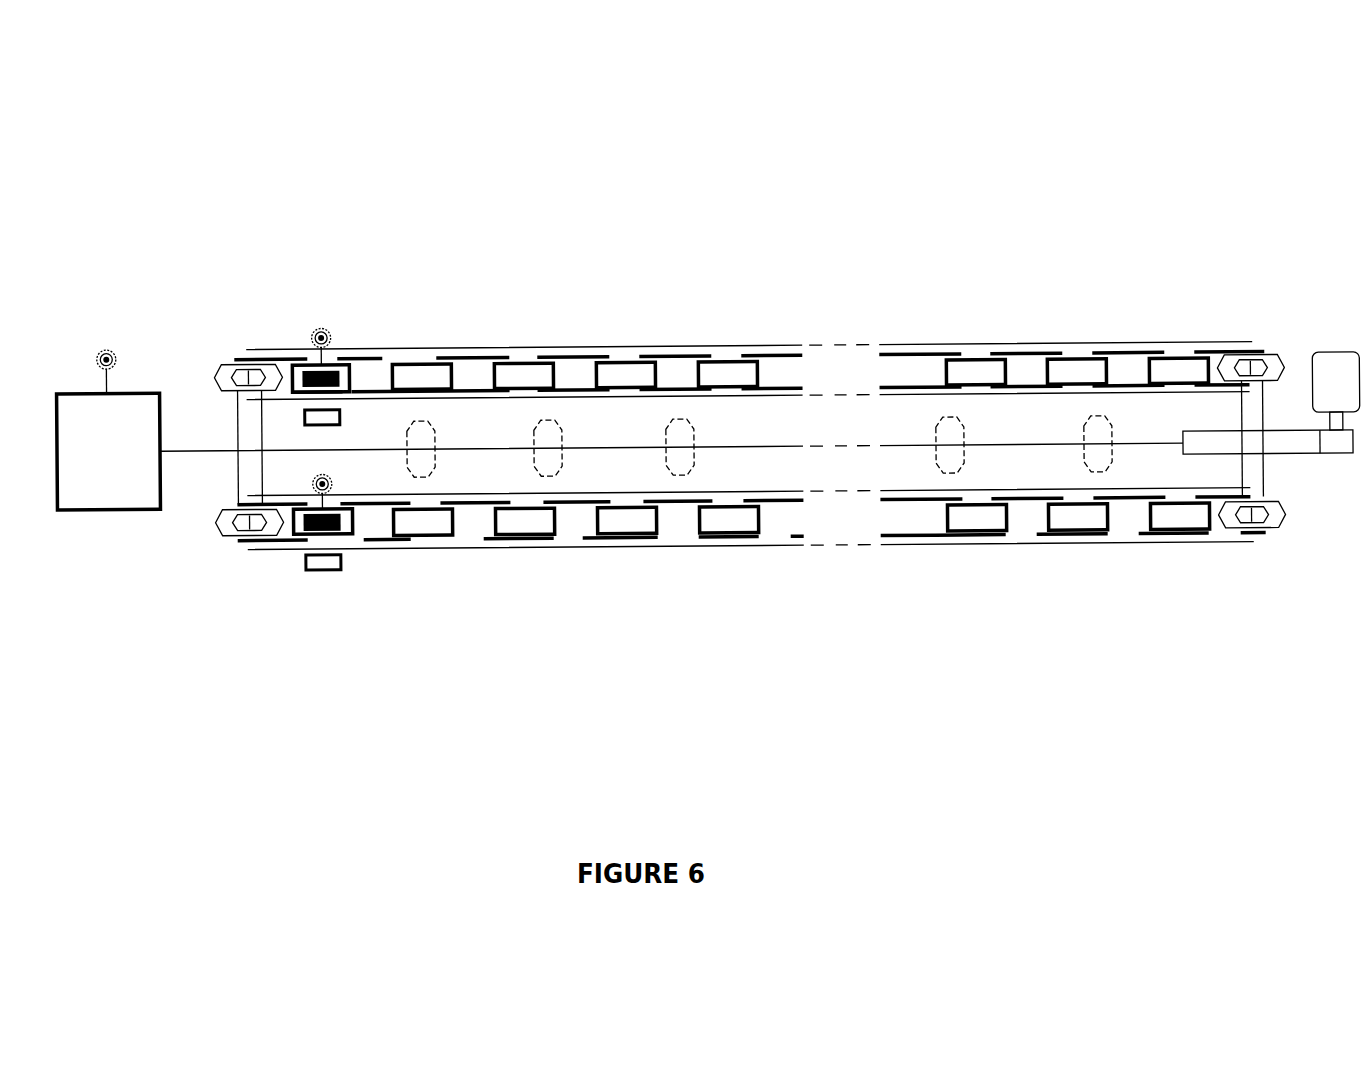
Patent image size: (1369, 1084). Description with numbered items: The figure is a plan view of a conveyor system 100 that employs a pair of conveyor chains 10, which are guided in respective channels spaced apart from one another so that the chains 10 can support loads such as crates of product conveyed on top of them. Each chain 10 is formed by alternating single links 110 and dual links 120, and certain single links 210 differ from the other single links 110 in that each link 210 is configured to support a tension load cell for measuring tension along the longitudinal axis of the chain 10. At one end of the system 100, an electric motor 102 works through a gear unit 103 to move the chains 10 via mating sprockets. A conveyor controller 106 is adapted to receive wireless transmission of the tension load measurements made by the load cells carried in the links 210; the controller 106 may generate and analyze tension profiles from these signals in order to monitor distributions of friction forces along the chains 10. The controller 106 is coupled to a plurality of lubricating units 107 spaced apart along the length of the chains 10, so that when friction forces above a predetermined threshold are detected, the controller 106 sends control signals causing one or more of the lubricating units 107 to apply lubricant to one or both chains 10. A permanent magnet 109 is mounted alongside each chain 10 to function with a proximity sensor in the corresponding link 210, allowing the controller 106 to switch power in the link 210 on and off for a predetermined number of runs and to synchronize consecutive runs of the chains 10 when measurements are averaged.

The conveyor system 100 is at (318, 158).
The conveyor chain 10 is at (270, 343).
The single link 110 is at (418, 372).
The dual link 120 is at (389, 353).
The single link 210 is at (334, 362).
The permanent magnet 109 is at (305, 414).
The conveyor controller 106 is at (109, 451).
The lubricating unit 107 is at (436, 452).
The electric motor 102 is at (1333, 368).
The gear unit 103 is at (1288, 446).